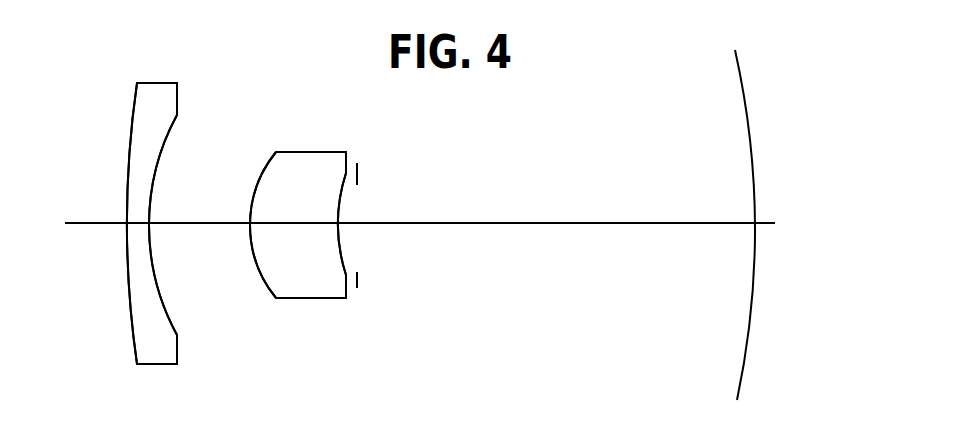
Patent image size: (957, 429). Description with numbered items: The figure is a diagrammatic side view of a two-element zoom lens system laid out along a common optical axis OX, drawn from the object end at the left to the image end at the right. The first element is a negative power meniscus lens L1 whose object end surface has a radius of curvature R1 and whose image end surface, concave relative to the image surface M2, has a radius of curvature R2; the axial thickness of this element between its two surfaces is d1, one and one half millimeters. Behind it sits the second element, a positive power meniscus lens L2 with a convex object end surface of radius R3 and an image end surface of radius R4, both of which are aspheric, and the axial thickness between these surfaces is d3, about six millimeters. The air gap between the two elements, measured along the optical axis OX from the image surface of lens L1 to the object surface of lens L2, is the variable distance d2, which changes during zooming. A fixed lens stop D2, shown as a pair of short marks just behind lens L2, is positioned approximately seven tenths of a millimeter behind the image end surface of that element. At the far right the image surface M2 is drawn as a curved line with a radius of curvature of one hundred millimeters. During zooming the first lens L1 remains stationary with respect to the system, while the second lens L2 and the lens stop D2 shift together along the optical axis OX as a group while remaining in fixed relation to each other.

The first negative power meniscus element L1 is at (163, 83).
The second positive power meniscus element L2 is at (292, 173).
The radius of curvature of surface S1 R1 is at (128, 270).
The radius of curvature of surface S2 R2 is at (158, 287).
The radius of curvature of surface S3 R3 is at (257, 262).
The radius of curvature of surface S4 R4 is at (341, 252).
The axial distance between surfaces S1 and S2 d1 is at (95, 223).
The axial distance between surfaces S2 and S3 d2 is at (202, 223).
The axial distance between surfaces S3 and S4 d3 is at (267, 222).
The lens stop D2 is at (358, 172).
The optical axis OX is at (538, 223).
The image surface M2 is at (753, 155).